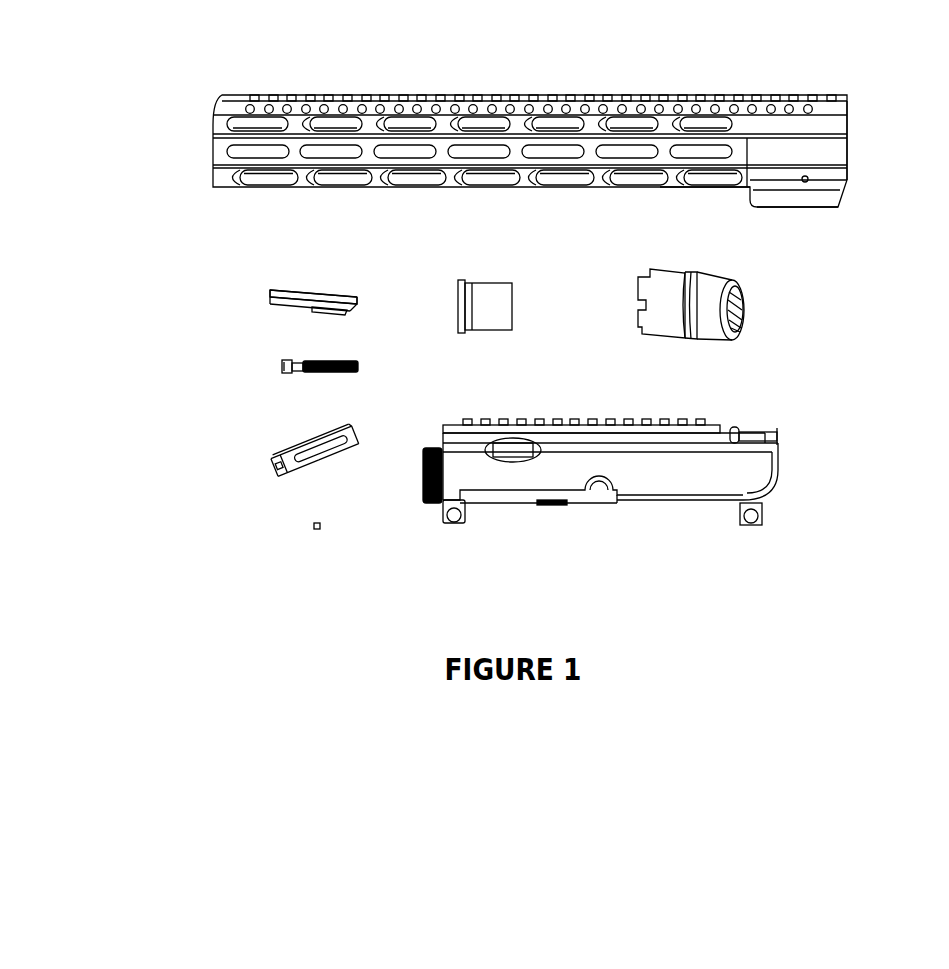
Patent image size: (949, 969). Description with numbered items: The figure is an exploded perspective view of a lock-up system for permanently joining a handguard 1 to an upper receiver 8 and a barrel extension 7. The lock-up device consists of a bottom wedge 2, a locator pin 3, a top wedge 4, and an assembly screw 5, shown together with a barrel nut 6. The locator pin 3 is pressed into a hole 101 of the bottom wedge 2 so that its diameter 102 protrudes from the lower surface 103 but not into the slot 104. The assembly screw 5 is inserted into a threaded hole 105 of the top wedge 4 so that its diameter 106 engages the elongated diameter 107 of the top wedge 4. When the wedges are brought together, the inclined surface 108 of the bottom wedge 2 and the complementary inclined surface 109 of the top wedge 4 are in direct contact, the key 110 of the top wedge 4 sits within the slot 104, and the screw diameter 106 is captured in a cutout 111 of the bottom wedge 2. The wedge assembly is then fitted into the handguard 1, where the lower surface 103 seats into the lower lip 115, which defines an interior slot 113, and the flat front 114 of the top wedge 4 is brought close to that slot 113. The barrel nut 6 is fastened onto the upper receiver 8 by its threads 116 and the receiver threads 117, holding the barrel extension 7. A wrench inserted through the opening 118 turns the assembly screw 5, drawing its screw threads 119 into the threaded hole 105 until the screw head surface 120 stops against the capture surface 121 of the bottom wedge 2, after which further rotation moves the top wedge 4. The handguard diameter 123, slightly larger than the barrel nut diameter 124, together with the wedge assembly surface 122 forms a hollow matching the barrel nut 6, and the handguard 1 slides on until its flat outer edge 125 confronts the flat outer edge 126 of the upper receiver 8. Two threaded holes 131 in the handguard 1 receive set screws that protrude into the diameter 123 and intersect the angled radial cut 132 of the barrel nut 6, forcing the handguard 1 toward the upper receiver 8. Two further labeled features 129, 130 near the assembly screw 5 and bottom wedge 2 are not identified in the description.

The handguard 1 is at (206, 103).
The bottom wedge 2 is at (298, 471).
The locator pin 3 is at (318, 530).
The top wedge 4 is at (318, 290).
The assembly screw 5 is at (313, 371).
The barrel nut 6 is at (691, 272).
The barrel extension 7 is at (496, 285).
The upper receiver 8 is at (590, 414).
The hole 101 is at (330, 440).
The diameter 102 is at (312, 526).
The lower surface 103 is at (360, 449).
The slot 104 is at (336, 456).
The threaded hole 105 is at (358, 304).
The diameter 106 is at (285, 360).
The elongated diameter 107 is at (268, 298).
The inclined surface 108 is at (291, 451).
The complementary inclined surface 109 is at (290, 303).
The key 110 is at (336, 311).
The cutout 111 is at (276, 466).
The interior slot 113 is at (849, 188).
The flat front 114 is at (271, 289).
The lower lip 115 is at (773, 196).
The threads 116 is at (740, 320).
The threads 117 is at (430, 504).
The opening 118 is at (752, 189).
The screw threads 119 is at (346, 371).
The screw head surface 120 is at (299, 359).
The capture surface 121 is at (276, 461).
The wedge assembly surface 122 is at (330, 291).
The handguard diameter 123 is at (849, 148).
The diameter 124 is at (665, 318).
The flat outer edge 125 is at (850, 106).
The flat outer edge 126 is at (436, 434).
The socket of screw head 129 is at (282, 371).
The end face of locking bar 130 is at (277, 471).
The threaded holes 131 is at (805, 184).
The radial cut 132 is at (705, 340).